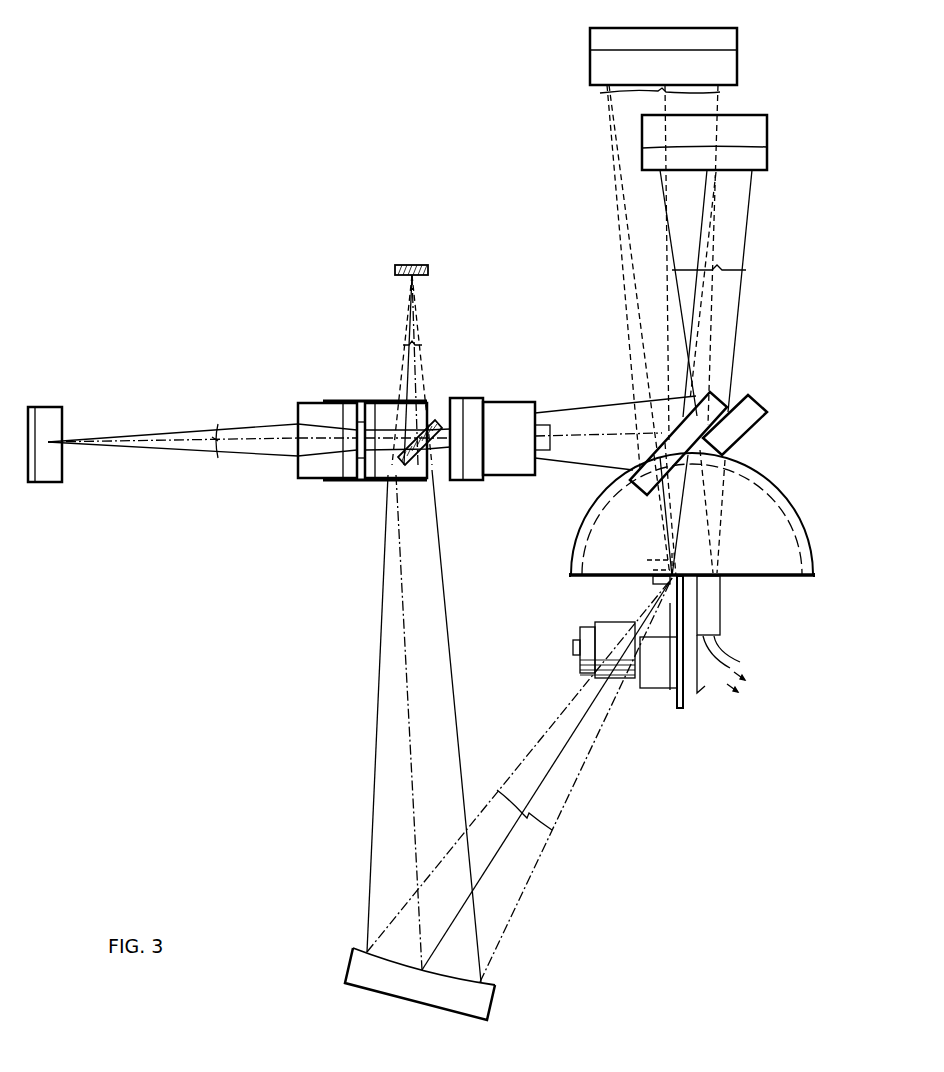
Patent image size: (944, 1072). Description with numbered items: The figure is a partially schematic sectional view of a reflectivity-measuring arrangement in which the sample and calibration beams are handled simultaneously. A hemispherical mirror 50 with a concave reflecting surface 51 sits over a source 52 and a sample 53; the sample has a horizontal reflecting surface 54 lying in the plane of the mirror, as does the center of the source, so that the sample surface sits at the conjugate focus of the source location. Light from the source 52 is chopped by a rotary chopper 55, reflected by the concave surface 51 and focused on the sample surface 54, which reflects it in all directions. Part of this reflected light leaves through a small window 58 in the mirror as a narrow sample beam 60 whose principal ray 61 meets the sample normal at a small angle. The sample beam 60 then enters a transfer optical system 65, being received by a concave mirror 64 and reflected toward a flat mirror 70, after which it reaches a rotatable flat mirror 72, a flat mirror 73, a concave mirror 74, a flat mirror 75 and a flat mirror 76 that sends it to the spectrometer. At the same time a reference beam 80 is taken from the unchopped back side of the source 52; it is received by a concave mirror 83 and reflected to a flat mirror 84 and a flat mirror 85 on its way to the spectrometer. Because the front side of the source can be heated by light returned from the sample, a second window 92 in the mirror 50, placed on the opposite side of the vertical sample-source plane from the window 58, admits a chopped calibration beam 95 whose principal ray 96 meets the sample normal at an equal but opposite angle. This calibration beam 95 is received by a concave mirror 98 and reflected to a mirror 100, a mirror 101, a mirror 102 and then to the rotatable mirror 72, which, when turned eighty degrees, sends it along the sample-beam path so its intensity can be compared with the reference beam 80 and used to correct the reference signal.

The hemispherical mirror 50 is at (780, 490).
The concave reflecting surface 51 is at (792, 578).
The source 52 is at (651, 583).
The sample 53 is at (722, 627).
The horizontal reflecting surface 54 is at (722, 577).
The rotary chopper 55 is at (645, 690).
The window 58 is at (716, 452).
The sample beam 60 is at (717, 266).
The principal ray 61 is at (708, 368).
The concave mirror 64 is at (767, 146).
The transfer optical system 65 is at (492, 204).
The flat mirror 70 is at (760, 405).
The rotatable flat mirror 72 is at (548, 423).
The flat mirror 73 is at (309, 482).
The concave mirror 74 is at (360, 400).
The flat mirror 75 is at (388, 478).
The flat mirror 76 is at (45, 405).
The reference beam 80 is at (416, 342).
The concave mirror 83 is at (495, 1001).
The flat mirror 84 is at (428, 268).
The flat mirror 85 is at (427, 460).
The window 92 is at (650, 452).
The calibration beam 95 is at (645, 92).
The principal ray 96 is at (668, 373).
The concave mirror 98 is at (590, 72).
The mirror 100 is at (625, 492).
The mirror 101 is at (465, 398).
The mirror 102 is at (535, 478).